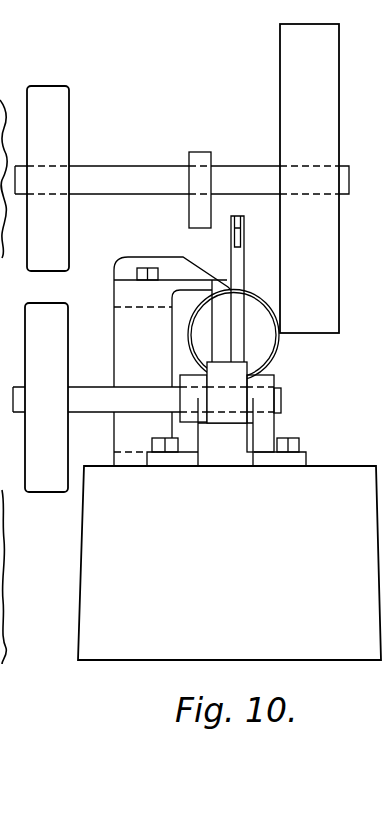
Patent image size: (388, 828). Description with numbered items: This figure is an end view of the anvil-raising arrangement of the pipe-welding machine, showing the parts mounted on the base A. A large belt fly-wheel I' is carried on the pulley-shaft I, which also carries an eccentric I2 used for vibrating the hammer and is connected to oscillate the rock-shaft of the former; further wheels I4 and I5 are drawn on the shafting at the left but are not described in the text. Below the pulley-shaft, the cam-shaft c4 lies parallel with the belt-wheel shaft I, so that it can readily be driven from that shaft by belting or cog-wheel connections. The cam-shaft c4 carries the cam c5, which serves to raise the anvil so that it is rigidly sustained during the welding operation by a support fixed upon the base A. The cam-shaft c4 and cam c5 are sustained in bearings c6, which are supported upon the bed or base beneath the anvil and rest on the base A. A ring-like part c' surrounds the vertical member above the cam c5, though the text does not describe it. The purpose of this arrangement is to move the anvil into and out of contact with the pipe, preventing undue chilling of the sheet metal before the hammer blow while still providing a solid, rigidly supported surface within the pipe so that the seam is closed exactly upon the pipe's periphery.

The pulley-shaft I is at (182, 162).
The belt fly-wheel I' is at (289, 178).
The eccentric I2 is at (184, 135).
The wheel I4 is at (72, 115).
The wheel I5 is at (25, 348).
The ring c' is at (233, 335).
The cam-shaft c4 is at (103, 387).
The cam c5 is at (266, 372).
The bearings c6 is at (274, 422).
The base A is at (229, 563).